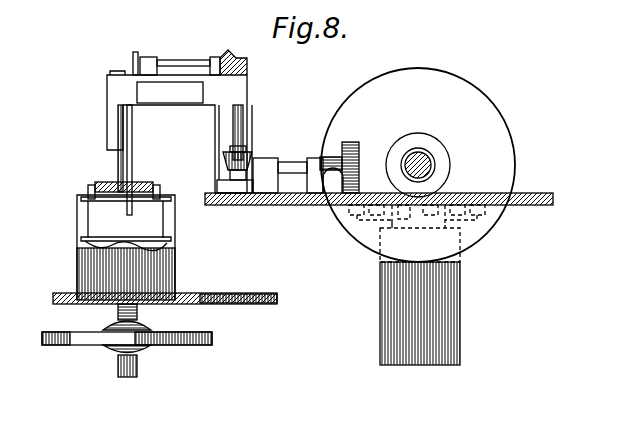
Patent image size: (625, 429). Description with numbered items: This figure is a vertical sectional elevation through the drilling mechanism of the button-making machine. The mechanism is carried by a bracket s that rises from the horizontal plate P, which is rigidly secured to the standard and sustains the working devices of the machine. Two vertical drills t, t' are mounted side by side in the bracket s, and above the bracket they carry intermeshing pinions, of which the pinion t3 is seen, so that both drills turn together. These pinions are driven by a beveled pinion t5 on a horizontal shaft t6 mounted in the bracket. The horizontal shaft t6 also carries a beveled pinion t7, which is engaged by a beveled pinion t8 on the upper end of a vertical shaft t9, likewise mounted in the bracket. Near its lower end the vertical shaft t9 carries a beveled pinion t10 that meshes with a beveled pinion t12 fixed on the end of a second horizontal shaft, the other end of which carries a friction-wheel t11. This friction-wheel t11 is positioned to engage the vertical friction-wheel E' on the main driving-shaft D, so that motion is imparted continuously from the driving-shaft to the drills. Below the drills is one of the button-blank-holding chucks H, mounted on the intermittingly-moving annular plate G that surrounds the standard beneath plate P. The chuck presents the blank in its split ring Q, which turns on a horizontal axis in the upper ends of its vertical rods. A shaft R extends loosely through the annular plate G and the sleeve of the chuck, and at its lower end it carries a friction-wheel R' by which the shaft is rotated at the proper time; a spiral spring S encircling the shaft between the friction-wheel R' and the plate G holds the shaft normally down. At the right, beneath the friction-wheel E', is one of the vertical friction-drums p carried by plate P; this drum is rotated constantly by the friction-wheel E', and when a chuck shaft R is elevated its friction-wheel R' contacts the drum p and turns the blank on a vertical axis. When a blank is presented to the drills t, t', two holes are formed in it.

The intermeshing pinion t3 is at (112, 71).
The beveled pinion t5 is at (134, 60).
The horizontal shaft t6 is at (184, 60).
The beveled pinion t7 is at (228, 52).
The beveled pinion t8 is at (293, 58).
The vertical shaft t9 is at (244, 113).
The beveled pinion t10 is at (248, 158).
The friction-wheel t11 is at (361, 154).
The beveled pinion t12 is at (262, 166).
The bracket s is at (208, 120).
The vertical drill t is at (113, 148).
The vertical drill t' is at (136, 160).
The split ring Q is at (155, 183).
The button-blank-holding chuck H is at (176, 238).
The annular plate G is at (165, 289).
The spiral spring S is at (139, 314).
The friction-wheel R' is at (141, 341).
The shaft R is at (142, 367).
The vertical friction-wheel E' is at (418, 165).
The main driving-shaft D is at (430, 160).
The horizontal plate P is at (379, 209).
The vertical friction-drum p is at (428, 308).